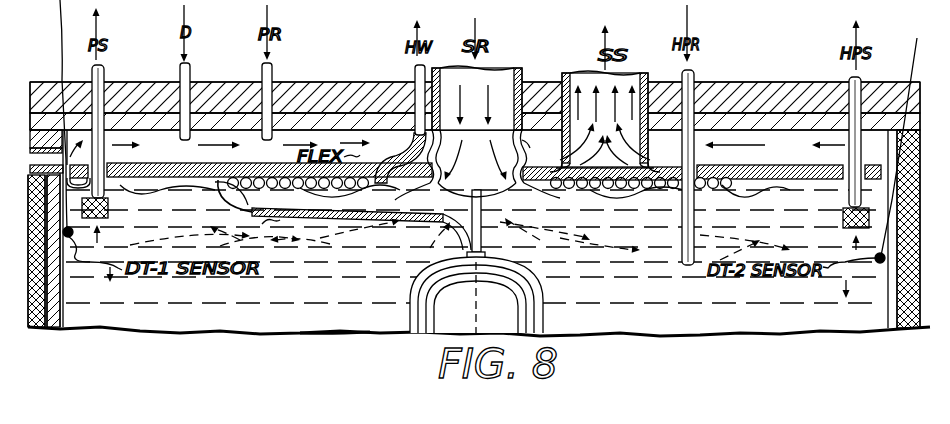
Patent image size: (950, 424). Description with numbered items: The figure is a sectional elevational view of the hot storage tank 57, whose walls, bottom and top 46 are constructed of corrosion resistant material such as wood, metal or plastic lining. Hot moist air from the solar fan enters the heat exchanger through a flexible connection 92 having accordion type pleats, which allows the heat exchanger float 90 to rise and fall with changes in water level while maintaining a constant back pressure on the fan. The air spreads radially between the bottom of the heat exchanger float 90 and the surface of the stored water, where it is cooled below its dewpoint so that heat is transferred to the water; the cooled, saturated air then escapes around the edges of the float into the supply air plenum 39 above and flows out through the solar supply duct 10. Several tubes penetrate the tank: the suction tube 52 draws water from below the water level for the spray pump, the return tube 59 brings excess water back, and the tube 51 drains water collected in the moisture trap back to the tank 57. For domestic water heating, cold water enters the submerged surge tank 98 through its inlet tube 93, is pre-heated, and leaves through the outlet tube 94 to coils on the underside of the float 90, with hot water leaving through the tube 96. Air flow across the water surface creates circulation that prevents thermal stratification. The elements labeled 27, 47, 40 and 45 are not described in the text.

The suction tube 52 is at (102, 75).
The tube 51 is at (190, 71).
The return tube 59 is at (272, 71).
The tube 96 is at (415, 72).
The supply duct SR 27 is at (521, 74).
The solar supply duct 10 is at (645, 78).
The heat pump return pipe HPR 47 is at (690, 78).
The heat pump supply pipe HPS 40 is at (923, 36).
The supply air plenum 39 is at (160, 155).
The tank walls, bottom and top 46 is at (761, 145).
The flexible connection 92 is at (563, 150).
The heat exchanger float 90 is at (671, 166).
The bead row 45 is at (776, 187).
The inlet tube 93 is at (484, 221).
The outlet tube 94 is at (298, 231).
The surge tank 98 is at (408, 291).
The hot storage tank 57 is at (347, 320).